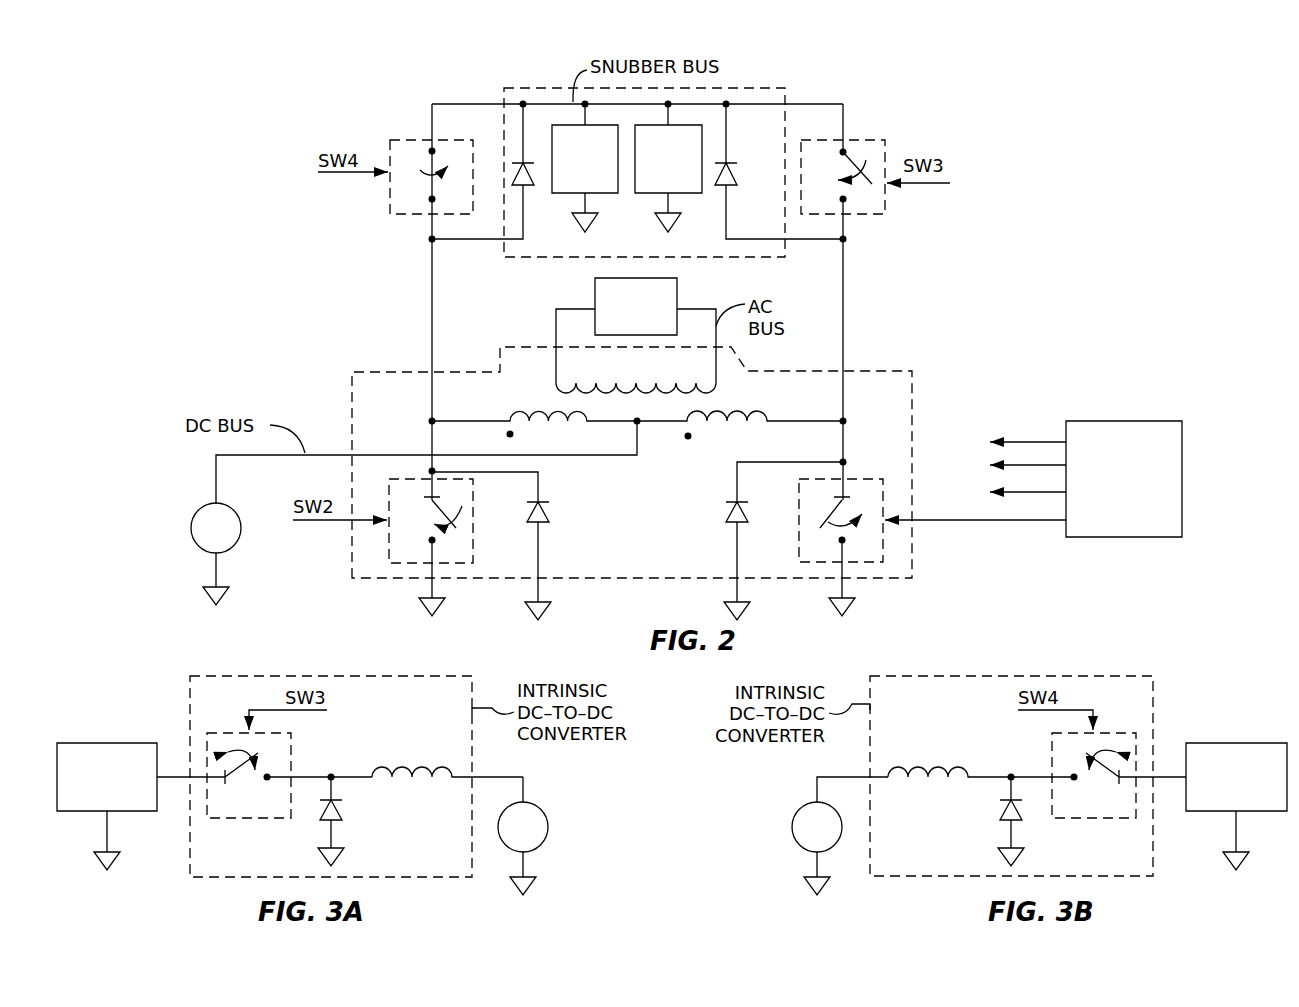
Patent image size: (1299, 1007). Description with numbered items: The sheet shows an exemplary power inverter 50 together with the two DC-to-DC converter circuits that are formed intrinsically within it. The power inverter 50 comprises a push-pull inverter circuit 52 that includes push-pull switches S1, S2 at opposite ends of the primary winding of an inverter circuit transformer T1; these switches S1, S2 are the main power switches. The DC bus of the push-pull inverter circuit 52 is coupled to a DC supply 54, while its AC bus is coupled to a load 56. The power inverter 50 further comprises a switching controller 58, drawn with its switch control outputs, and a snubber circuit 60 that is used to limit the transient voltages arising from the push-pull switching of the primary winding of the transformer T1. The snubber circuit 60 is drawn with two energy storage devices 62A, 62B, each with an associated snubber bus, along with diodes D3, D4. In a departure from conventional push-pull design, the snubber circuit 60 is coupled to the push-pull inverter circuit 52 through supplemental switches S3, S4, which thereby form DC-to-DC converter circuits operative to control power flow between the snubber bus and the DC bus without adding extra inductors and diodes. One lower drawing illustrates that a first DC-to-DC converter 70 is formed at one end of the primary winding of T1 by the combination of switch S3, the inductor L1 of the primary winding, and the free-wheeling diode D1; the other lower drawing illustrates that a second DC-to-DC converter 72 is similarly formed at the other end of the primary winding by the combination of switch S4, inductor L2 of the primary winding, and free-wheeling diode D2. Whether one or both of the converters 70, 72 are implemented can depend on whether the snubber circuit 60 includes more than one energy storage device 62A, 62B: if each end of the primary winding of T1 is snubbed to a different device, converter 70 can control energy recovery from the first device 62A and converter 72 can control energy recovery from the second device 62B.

In FIG. 2, the power inverter 50 is at (975, 572).
In FIG. 2, the push-pull inverter circuit 52 is at (650, 570).
In FIG. 2, the DC supply 54 is at (205, 539).
In FIG. 3A, the DC supply 54 is at (512, 838).
In FIG. 3B, the DC supply 54 is at (806, 838).
In FIG. 2, the load 56 is at (625, 330).
In FIG. 2, the switching controller 58 is at (1112, 490).
In FIG. 2, the snubber circuit 60 is at (638, 238).
In FIG. 3A, the snubber circuit 60 is at (95, 789).
In FIG. 3B, the snubber circuit 60 is at (1224, 789).
In FIG. 2, the energy storage device (ESD) 62A is at (569, 181).
In FIG. 2, the energy storage device (ESD) 62B is at (652, 181).
In FIG. 3A, the first DC-to-DC converter 70 is at (136, 667).
In FIG. 3B, the second DC-to-DC converter 72 is at (1202, 669).
In FIG. 2, the push-pull switch S1 is at (829, 562).
In FIG. 2, the push-pull switch S2 is at (419, 562).
In FIG. 2, the supplemental switch S3 is at (832, 214).
In FIG. 3A, the supplemental switch S3 is at (259, 816).
In FIG. 2, the supplemental switch S4 is at (420, 214).
In FIG. 3B, the supplemental switch S4 is at (1116, 816).
In FIG. 2, the free-wheeling diode D1 is at (737, 526).
In FIG. 3A, the free-wheeling diode D1 is at (331, 822).
In FIG. 2, the free-wheeling diode D2 is at (538, 526).
In FIG. 3B, the free-wheeling diode D2 is at (1011, 822).
In FIG. 2, the diode D3 is at (726, 190).
In FIG. 2, the diode D4 is at (523, 190).
In FIG. 2, the inductor L1 is at (740, 430).
In FIG. 3A, the inductor L1 is at (447, 784).
In FIG. 2, the inductor L2 is at (534, 430).
In FIG. 3B, the inductor L2 is at (981, 784).
In FIG. 2, the inverter circuit transformer T1 is at (650, 388).